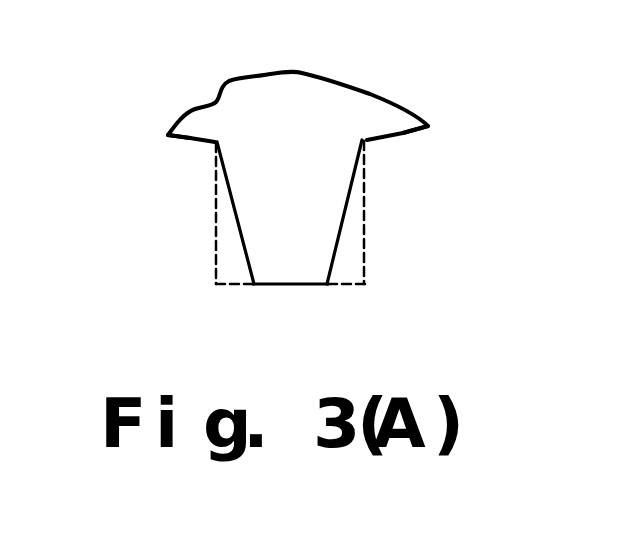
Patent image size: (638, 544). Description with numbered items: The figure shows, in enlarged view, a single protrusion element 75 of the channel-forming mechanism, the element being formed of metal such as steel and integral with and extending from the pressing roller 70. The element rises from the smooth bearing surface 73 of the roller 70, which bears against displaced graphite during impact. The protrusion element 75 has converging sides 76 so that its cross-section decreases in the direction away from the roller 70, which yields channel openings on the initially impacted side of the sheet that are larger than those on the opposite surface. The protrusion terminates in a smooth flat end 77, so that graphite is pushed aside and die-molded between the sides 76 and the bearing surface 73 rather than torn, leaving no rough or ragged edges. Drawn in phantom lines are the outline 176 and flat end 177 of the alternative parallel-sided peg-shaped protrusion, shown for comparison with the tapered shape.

The pressing roller 70 is at (318, 90).
The smooth bearing surface 73 is at (187, 140).
The protrusion element 75 is at (328, 202).
The converging sides 76 is at (237, 225).
The smooth flat end 77 is at (292, 286).
The original vertical side (phantom) 176 is at (367, 263).
The smooth flat end 177 is at (235, 289).